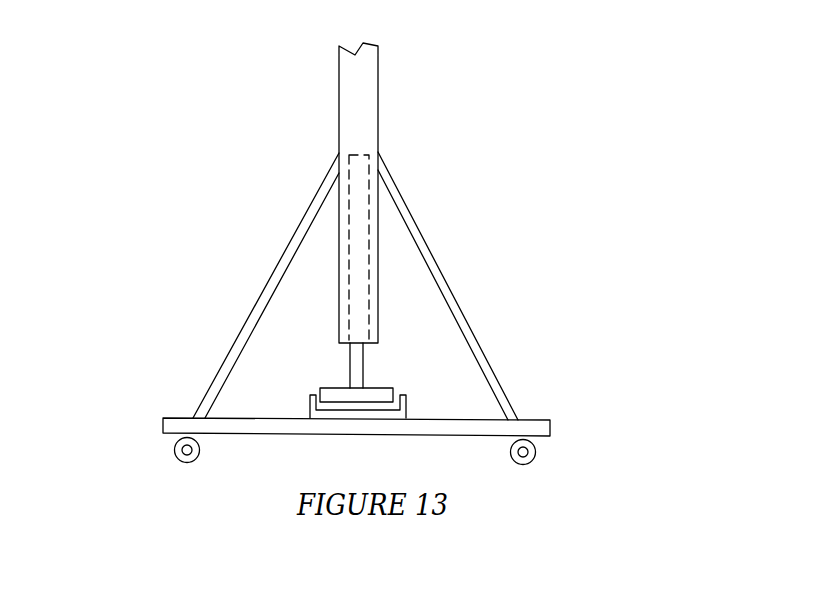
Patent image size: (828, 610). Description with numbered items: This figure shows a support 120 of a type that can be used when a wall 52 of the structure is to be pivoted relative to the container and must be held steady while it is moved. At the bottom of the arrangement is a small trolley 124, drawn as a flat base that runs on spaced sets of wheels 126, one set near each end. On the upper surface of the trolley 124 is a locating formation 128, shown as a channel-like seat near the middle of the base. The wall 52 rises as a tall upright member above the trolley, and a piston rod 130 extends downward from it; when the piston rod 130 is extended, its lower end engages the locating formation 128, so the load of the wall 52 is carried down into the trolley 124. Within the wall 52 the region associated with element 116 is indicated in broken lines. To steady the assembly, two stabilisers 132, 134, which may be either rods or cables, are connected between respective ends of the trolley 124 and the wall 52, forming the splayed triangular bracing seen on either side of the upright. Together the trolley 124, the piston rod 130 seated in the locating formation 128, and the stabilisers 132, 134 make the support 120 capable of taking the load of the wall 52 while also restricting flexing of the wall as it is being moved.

The wall 52 is at (360, 78).
The insert received in column 116 is at (360, 208).
The support 120 is at (385, 286).
The trolley 124 is at (364, 497).
The wheels 126 is at (177, 462).
The locating formation 128 is at (408, 409).
The piston rod 130 is at (363, 368).
The stabiliser 132 is at (245, 323).
The stabiliser 134 is at (453, 242).